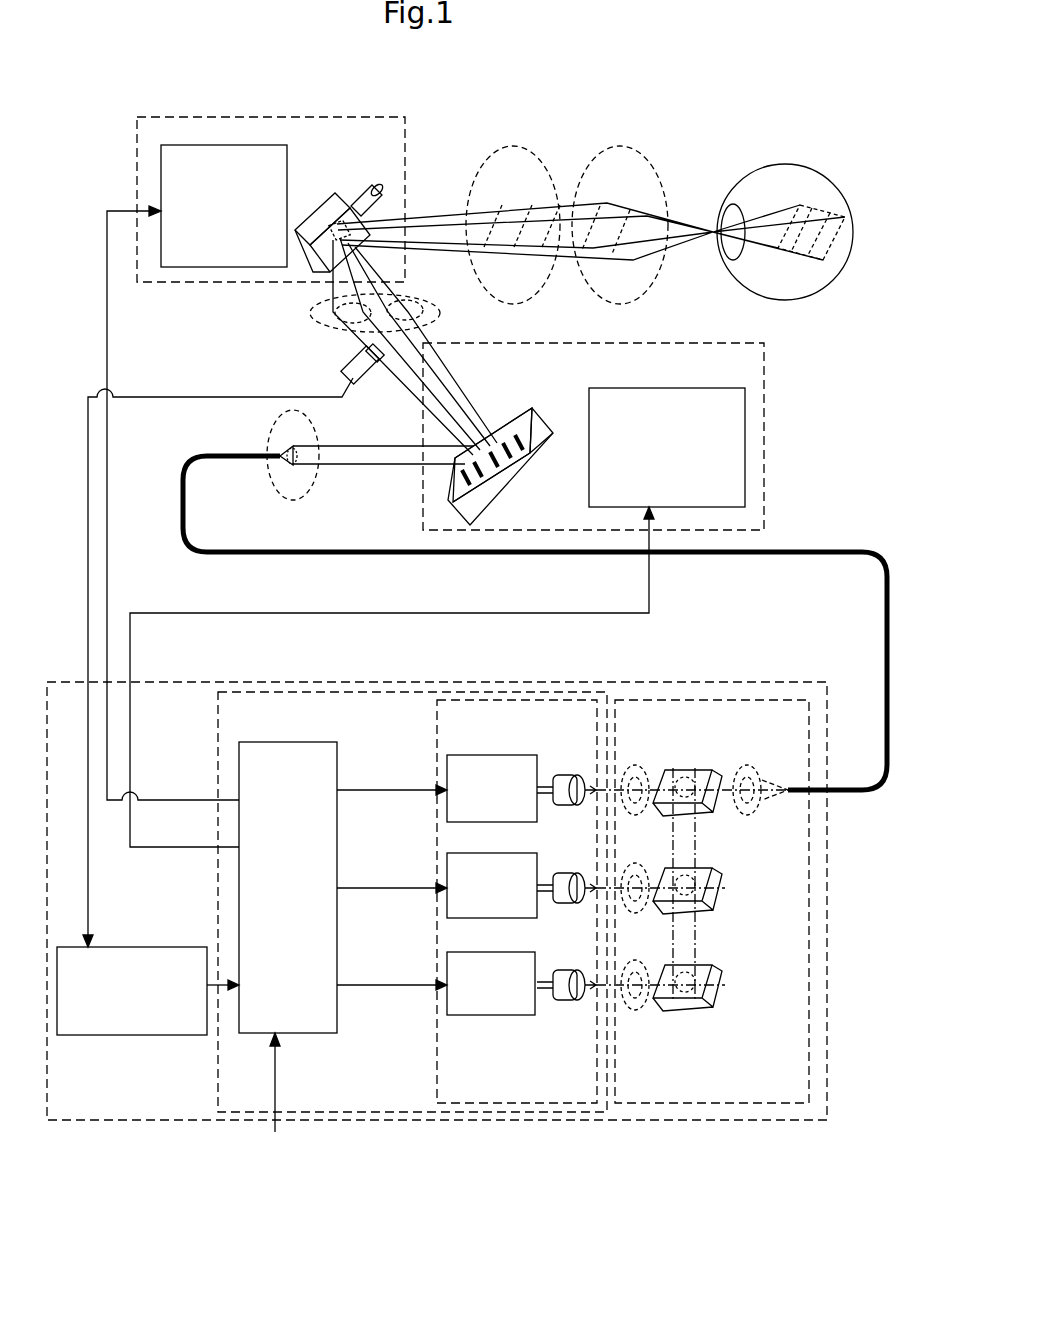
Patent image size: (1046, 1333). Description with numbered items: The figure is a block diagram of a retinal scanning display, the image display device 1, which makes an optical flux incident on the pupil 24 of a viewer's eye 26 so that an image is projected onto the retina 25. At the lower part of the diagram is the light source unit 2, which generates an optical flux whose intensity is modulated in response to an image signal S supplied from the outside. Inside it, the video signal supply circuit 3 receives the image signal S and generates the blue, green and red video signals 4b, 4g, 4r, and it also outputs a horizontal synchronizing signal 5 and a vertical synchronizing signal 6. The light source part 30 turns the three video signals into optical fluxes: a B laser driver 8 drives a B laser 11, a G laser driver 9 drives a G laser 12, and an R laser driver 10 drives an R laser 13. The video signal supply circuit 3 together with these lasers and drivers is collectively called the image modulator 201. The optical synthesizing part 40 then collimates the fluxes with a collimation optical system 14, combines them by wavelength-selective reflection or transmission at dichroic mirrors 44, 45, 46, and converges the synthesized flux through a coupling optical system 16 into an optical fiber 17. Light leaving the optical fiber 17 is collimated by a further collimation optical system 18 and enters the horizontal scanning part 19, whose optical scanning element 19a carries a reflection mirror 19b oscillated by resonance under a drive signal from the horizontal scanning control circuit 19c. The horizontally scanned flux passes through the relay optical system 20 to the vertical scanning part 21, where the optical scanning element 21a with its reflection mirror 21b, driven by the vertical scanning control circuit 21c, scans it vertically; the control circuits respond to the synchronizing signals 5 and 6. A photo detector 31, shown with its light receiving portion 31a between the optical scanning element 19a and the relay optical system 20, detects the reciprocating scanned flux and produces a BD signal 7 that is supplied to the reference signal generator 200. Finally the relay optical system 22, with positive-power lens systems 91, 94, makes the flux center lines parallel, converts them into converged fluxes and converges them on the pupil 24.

The image display device 1 is at (492, 62).
The light source unit 2 is at (642, 1138).
The video signal supply circuit 3 is at (270, 742).
The video signal (blue) 4b is at (392, 761).
The video signal (green) 4g is at (392, 850).
The video signal (red) 4r is at (392, 949).
The horizontal synchronizing signal 5 is at (130, 644).
The vertical synchronizing signal 6 is at (107, 586).
The BD signal 7 is at (136, 878).
The B laser driver 8 is at (470, 755).
The G laser driver 9 is at (470, 853).
The R laser driver 10 is at (470, 952).
The B laser 11 is at (576, 779).
The G laser 12 is at (576, 882).
The R laser 13 is at (576, 976).
The collimation optical system 14 is at (640, 748).
The coupling optical system 16 is at (746, 748).
The optical fiber 17 is at (776, 534).
The collimation optical system 18 is at (334, 478).
The horizontal scanning part 19 is at (776, 438).
The optical scanning element 19a is at (544, 419).
The reflection mirror 19b is at (496, 422).
The horizontal scanning control circuit 19c is at (642, 388).
The relay optical system 20 is at (298, 306).
The vertical scanning part 21 is at (233, 111).
The optical scanning element 21a is at (333, 202).
The reflection mirror 21b is at (356, 198).
The vertical scanning control circuit 21c is at (239, 145).
The relay optical system 22 is at (590, 192).
The pupil 24 is at (733, 260).
The retina 25 is at (845, 243).
The eye 26 is at (790, 146).
The light source part 30 is at (533, 1112).
The photo detector 31 is at (235, 645).
The beam detector light receiving portion 31a is at (343, 361).
The optical synthesizing part 40 is at (752, 1104).
The dichroic mirror 44 is at (697, 770).
The dichroic mirror 45 is at (708, 873).
The dichroic mirror 46 is at (708, 970).
The lens system 91 is at (527, 148).
The lens system 94 is at (657, 162).
The reference signal generator 200 is at (120, 1036).
The image modulator 201 is at (403, 1112).